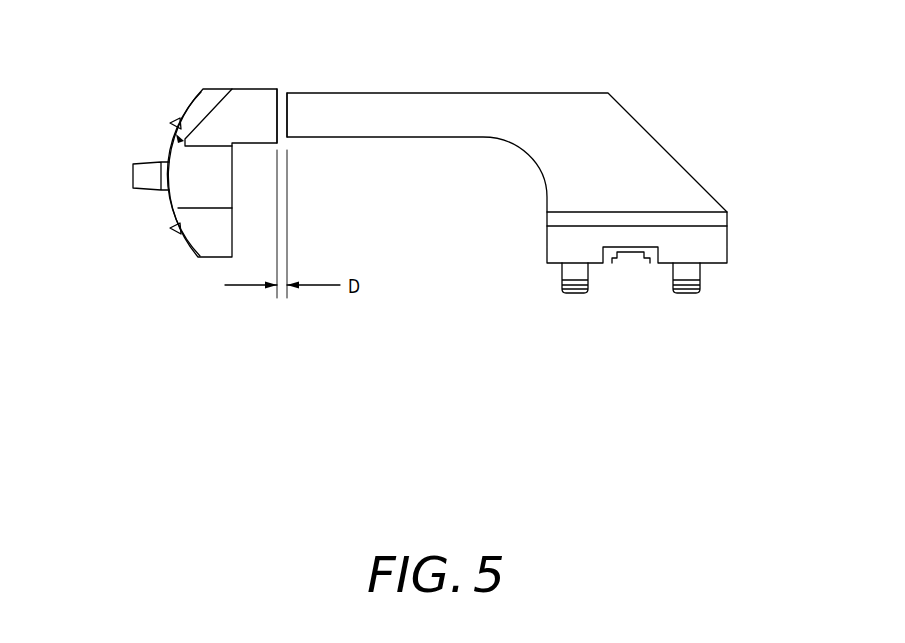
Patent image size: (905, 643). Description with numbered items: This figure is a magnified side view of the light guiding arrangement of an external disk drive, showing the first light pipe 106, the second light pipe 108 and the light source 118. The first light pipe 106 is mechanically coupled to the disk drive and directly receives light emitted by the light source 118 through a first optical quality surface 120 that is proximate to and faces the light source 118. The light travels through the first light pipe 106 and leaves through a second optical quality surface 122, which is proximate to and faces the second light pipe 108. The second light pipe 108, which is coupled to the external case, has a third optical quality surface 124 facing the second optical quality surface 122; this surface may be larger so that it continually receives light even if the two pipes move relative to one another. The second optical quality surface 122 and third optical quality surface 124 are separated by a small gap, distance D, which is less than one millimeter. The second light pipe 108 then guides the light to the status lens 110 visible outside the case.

The first light pipe 106 is at (673, 141).
The second light pipe 108 is at (250, 80).
The status lens 110 is at (133, 175).
The light source 118 is at (633, 266).
The first optical quality surface 120 is at (657, 268).
The second optical quality surface 122 is at (283, 146).
The third optical quality surface 124 is at (282, 98).